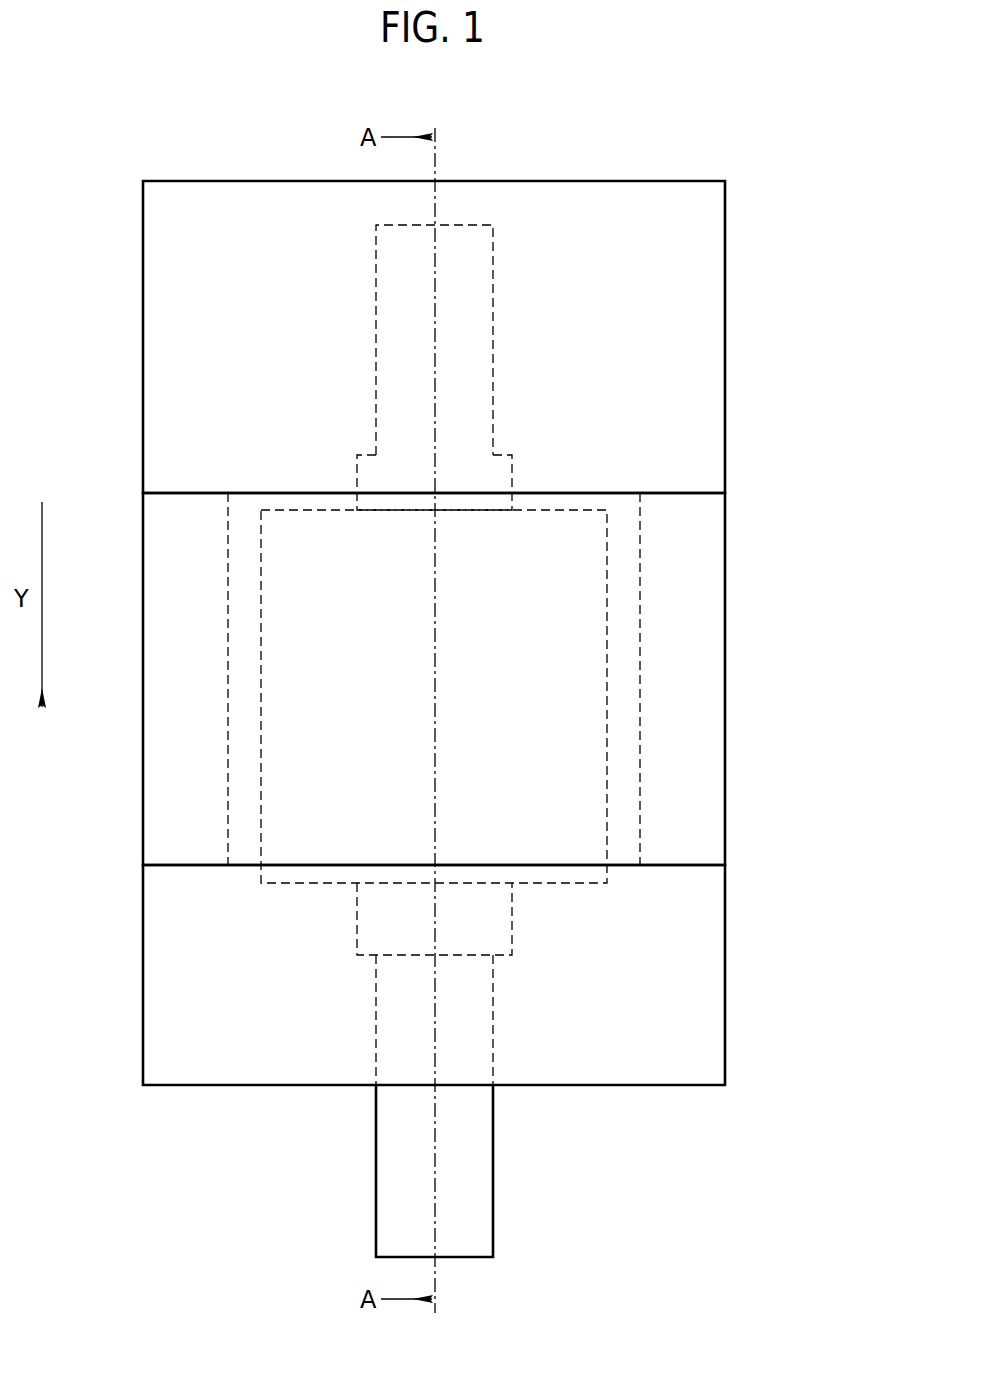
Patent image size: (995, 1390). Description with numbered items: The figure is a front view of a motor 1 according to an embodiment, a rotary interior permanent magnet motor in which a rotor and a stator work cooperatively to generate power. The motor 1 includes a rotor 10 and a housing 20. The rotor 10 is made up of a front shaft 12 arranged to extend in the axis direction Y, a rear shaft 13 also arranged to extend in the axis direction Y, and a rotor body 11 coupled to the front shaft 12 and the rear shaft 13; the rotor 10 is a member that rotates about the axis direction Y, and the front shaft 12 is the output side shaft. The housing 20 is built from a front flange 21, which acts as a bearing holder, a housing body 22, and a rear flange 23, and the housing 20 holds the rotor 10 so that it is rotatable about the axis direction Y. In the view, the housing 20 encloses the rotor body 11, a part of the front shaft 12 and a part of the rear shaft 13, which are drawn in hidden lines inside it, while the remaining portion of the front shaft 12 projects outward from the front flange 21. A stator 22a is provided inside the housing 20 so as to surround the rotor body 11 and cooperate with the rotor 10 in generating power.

The motor 1 is at (483, 663).
The rotor 10 is at (427, 741).
The rotor body 11 is at (574, 774).
The front shaft 12 is at (495, 1210).
The rear shaft 13 is at (386, 336).
The housing 20 is at (516, 633).
The front flange 21 is at (727, 1000).
The housing body 22 is at (476, 679).
The stator 22a is at (705, 548).
The rear flange 23 is at (727, 343).